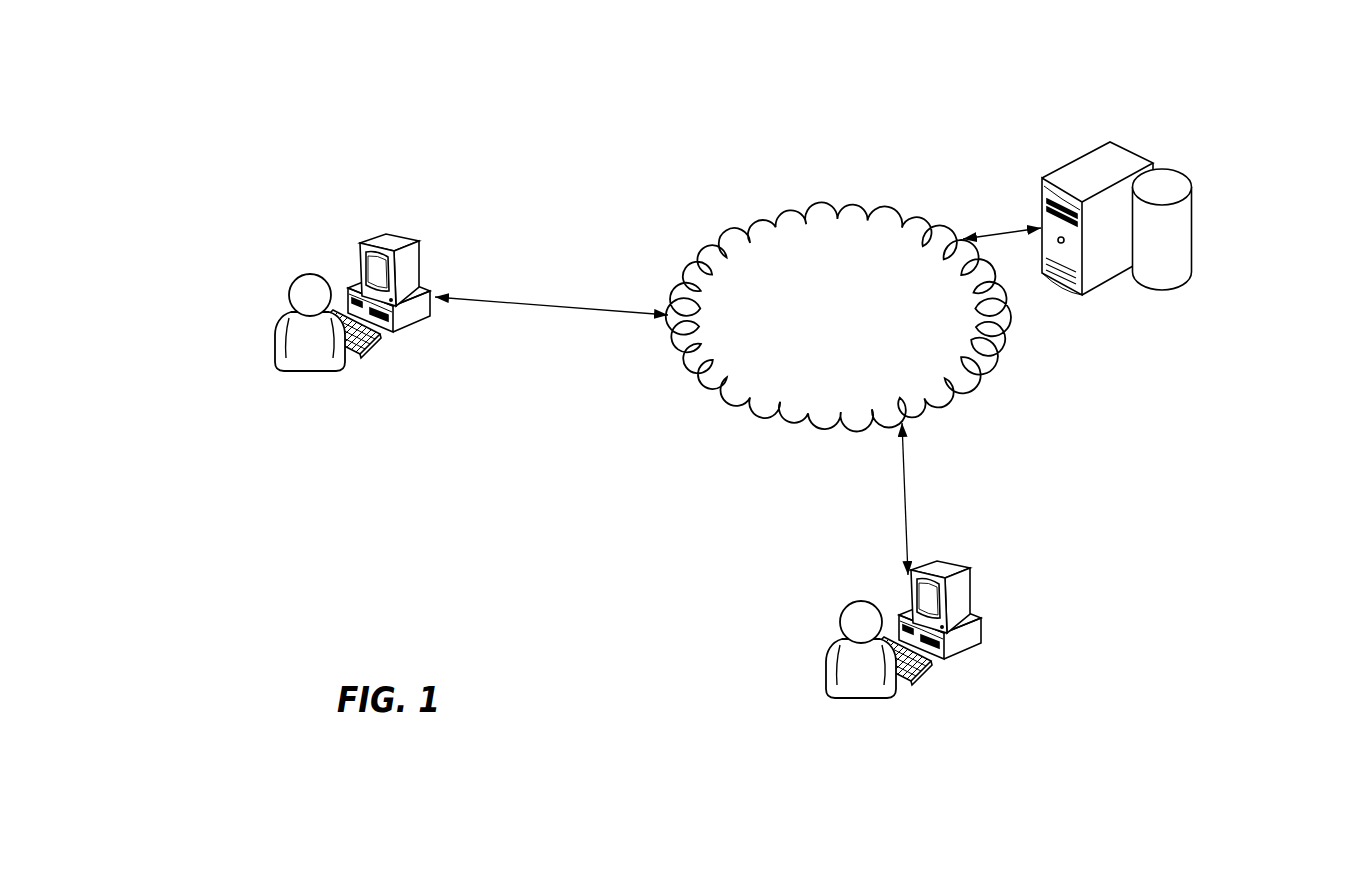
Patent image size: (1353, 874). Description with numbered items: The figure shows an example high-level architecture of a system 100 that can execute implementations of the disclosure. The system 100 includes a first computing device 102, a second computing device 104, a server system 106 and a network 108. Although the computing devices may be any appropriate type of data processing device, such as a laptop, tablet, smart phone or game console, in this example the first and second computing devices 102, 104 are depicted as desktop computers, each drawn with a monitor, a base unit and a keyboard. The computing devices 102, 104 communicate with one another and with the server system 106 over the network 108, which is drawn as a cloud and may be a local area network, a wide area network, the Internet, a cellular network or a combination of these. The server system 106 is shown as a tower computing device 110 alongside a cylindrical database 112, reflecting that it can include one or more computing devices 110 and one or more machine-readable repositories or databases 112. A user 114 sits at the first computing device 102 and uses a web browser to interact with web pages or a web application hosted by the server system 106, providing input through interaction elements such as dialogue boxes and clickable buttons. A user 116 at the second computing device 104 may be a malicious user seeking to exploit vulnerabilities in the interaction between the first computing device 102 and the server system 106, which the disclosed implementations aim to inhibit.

The system 100 is at (914, 86).
The first computing device 102 is at (418, 258).
The second computing device 104 is at (981, 613).
The server system 106 is at (1175, 206).
The network 108 is at (811, 203).
The computing device 110 is at (1133, 152).
The database 112 is at (1192, 182).
The user 114 is at (310, 274).
The user 116 is at (847, 700).